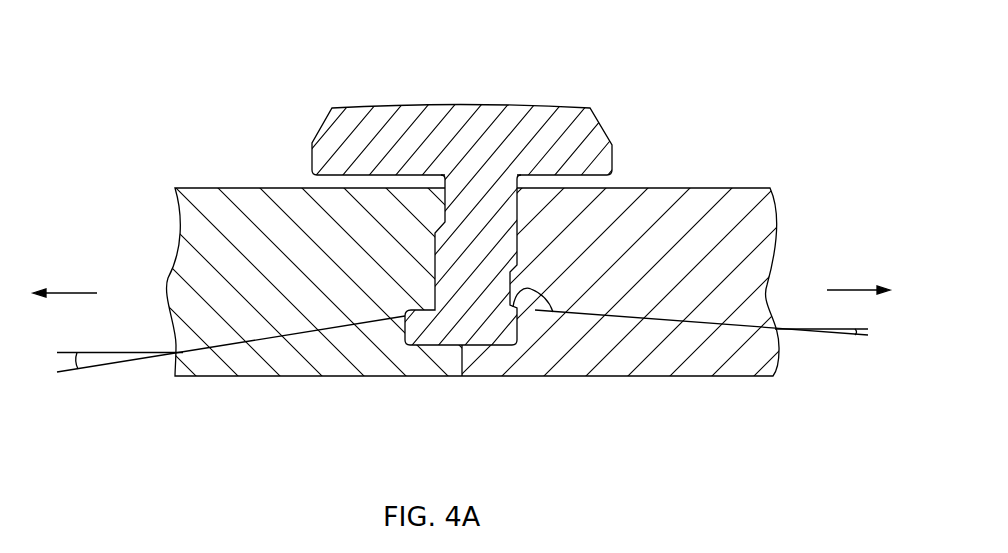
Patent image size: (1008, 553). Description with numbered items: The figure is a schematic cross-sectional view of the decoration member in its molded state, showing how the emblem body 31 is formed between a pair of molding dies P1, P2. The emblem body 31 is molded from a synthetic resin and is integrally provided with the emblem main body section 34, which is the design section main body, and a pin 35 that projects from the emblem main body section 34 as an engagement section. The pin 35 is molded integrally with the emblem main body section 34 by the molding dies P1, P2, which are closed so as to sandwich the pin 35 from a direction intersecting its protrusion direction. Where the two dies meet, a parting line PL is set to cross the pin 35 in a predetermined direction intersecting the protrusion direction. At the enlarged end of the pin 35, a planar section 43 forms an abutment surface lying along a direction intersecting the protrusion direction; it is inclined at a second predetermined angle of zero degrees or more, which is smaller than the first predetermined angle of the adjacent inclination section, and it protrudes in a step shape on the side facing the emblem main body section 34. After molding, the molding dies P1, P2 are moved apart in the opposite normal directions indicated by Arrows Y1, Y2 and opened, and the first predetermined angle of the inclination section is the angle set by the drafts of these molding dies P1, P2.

The emblem body 31 is at (409, 175).
The emblem main body section 34 is at (567, 122).
The pin 35 is at (517, 217).
The planar section 43 is at (553, 312).
The molding die P1 is at (334, 357).
The molding die P2 is at (655, 362).
The parting line PL is at (430, 348).
The Arrow Y1 is at (65, 277).
The Arrow Y2 is at (858, 275).